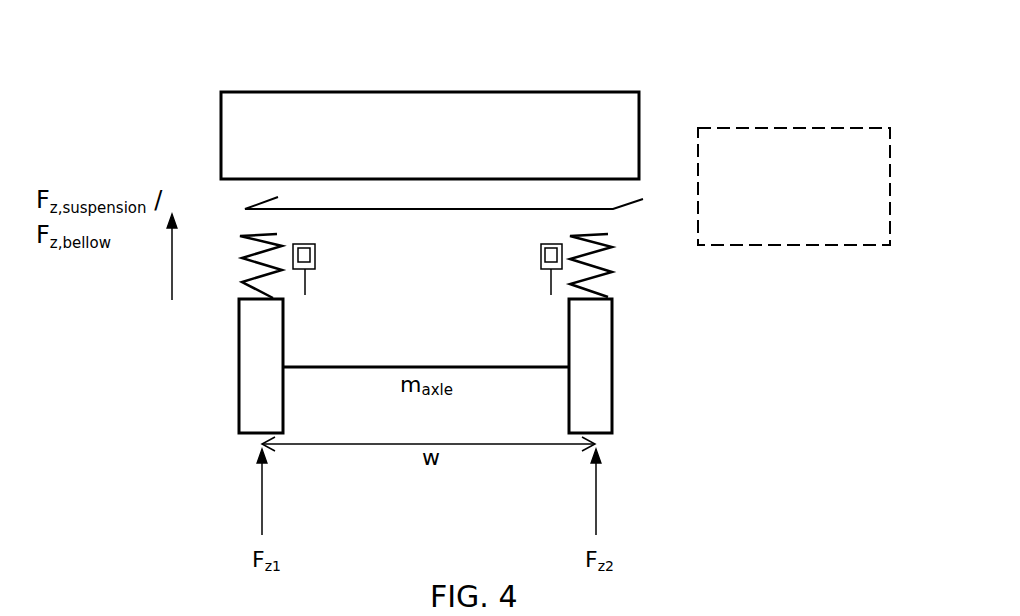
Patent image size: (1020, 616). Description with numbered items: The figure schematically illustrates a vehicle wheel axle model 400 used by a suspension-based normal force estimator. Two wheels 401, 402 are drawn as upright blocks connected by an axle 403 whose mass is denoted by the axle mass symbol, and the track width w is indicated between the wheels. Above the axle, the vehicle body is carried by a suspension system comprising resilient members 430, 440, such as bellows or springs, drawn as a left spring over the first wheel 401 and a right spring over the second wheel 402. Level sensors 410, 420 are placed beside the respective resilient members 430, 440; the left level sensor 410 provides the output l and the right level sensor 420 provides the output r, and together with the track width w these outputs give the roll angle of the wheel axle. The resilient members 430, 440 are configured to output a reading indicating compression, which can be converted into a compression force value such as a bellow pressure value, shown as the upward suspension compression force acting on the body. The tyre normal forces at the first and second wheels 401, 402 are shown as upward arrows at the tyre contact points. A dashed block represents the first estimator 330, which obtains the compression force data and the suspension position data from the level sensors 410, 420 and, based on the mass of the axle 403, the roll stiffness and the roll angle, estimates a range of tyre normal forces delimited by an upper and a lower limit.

The vehicle suspension model 400 is at (112, 66).
The first estimator 330 is at (794, 186).
The resilient member 430 is at (241, 259).
The resilient member 440 is at (603, 256).
The level sensor 410 is at (313, 273).
The level sensor 420 is at (541, 265).
The wheel 401 is at (238, 388).
The wheel 402 is at (612, 360).
The axle 403 is at (362, 368).